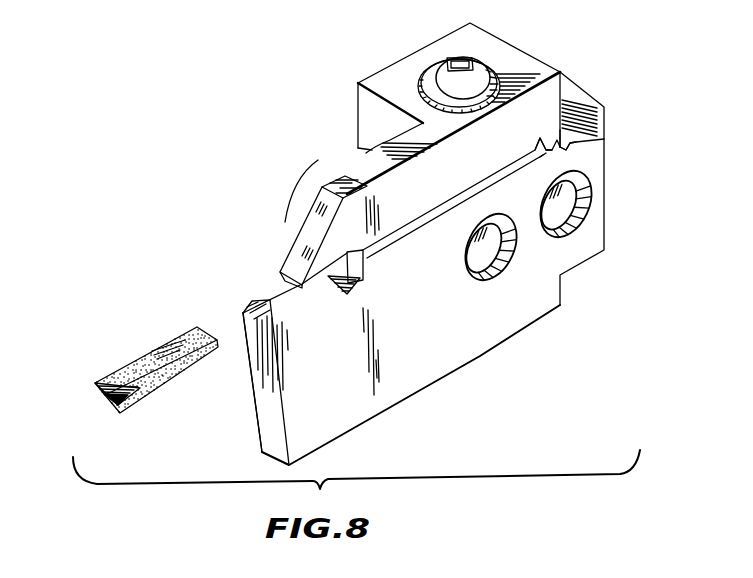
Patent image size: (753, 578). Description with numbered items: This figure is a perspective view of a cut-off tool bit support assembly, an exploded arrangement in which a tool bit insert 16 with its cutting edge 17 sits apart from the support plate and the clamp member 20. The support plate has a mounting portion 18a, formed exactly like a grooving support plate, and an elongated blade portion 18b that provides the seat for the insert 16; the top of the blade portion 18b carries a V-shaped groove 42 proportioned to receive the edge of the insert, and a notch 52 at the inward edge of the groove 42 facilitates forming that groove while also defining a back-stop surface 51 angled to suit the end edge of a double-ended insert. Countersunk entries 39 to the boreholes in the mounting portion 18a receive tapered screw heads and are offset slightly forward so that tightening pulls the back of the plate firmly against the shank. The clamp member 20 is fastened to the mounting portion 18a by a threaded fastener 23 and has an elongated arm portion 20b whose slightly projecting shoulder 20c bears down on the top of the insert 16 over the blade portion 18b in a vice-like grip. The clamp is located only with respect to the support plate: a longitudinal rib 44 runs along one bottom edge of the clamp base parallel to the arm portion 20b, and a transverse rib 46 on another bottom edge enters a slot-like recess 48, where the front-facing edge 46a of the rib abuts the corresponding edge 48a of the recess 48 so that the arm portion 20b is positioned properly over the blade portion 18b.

The tool bit insert 16 is at (153, 350).
The cutting edge 17 is at (97, 397).
The mounting portion 18a is at (610, 285).
The blade portion 18b is at (488, 356).
The clamp member 20 is at (487, 47).
The arm portion 20b is at (358, 148).
The shoulder 20c is at (309, 290).
The threaded fastener 23 is at (452, 66).
The countersunk entry 39 is at (503, 262).
The V-shaped groove 42 is at (267, 306).
The longitudinal rib 44 is at (365, 152).
The transverse rib 46 is at (555, 146).
The front-facing edge 46a is at (543, 143).
The slot-like recess 48 is at (563, 150).
The recess edge 48a is at (548, 153).
The back-stop surface 51 is at (366, 274).
The notch 52 is at (345, 290).